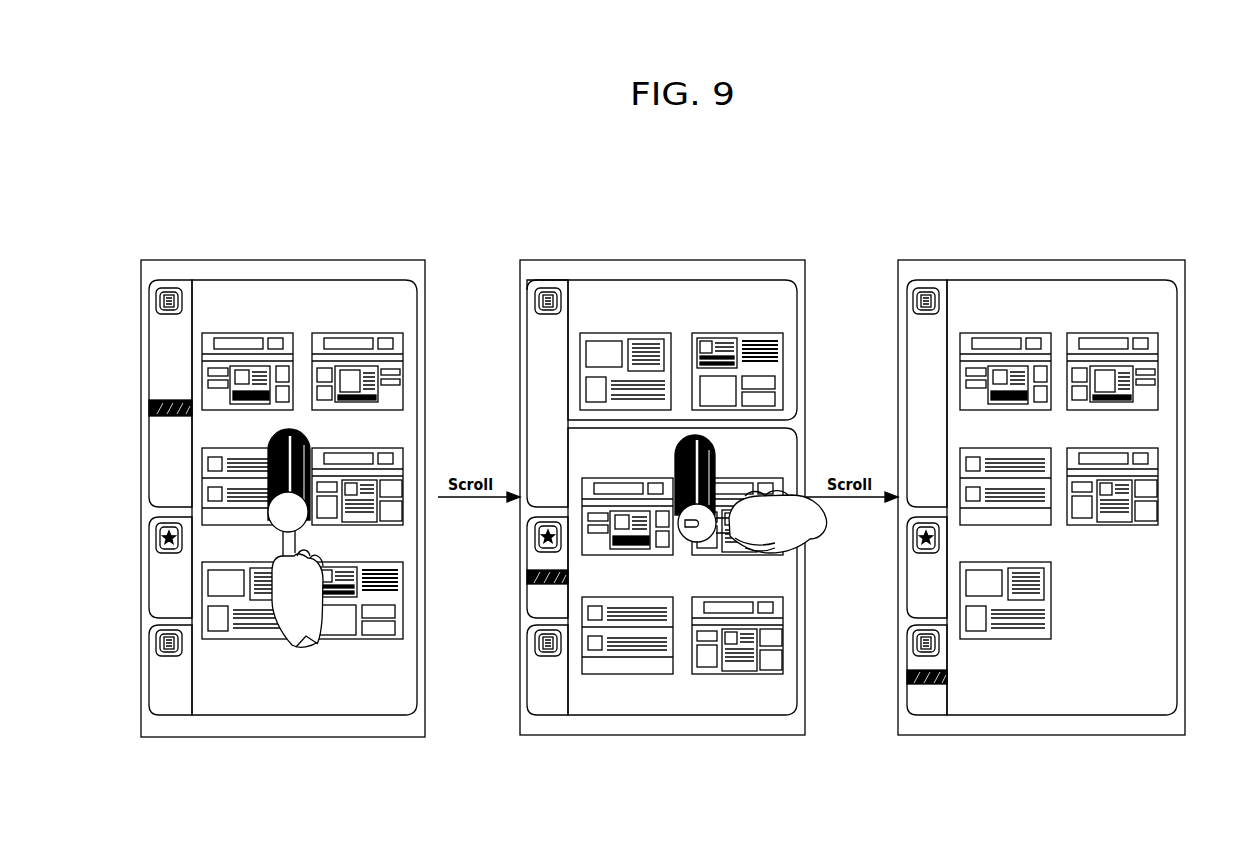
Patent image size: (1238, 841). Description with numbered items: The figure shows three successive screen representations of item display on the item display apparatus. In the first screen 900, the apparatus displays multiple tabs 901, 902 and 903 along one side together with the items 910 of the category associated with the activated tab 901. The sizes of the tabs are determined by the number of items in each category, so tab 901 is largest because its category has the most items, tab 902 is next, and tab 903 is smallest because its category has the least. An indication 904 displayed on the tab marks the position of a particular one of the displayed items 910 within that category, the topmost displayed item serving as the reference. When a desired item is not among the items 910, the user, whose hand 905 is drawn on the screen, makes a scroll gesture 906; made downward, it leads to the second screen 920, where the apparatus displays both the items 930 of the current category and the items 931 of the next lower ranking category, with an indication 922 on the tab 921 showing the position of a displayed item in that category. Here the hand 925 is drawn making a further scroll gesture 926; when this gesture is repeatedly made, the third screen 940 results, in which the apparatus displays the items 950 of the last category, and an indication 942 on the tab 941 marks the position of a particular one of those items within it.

The screen 900 is at (303, 237).
The tab 901 is at (160, 342).
The tab 902 is at (160, 572).
The tab 903 is at (160, 683).
The indication 904 is at (150, 406).
The user hand/finger touch 905 is at (303, 636).
The scroll gesture 906 is at (323, 457).
The items 910 is at (410, 377).
The screen 920 is at (683, 237).
The tab 921 is at (528, 603).
The indication 922 is at (528, 575).
The user hand 925 is at (826, 523).
The scroll gesture 926 is at (716, 455).
The items 930 is at (790, 316).
The items 931 is at (796, 450).
The screen 940 is at (1061, 237).
The tab 941 is at (915, 703).
The indication 942 is at (908, 676).
The items 950 is at (1172, 375).